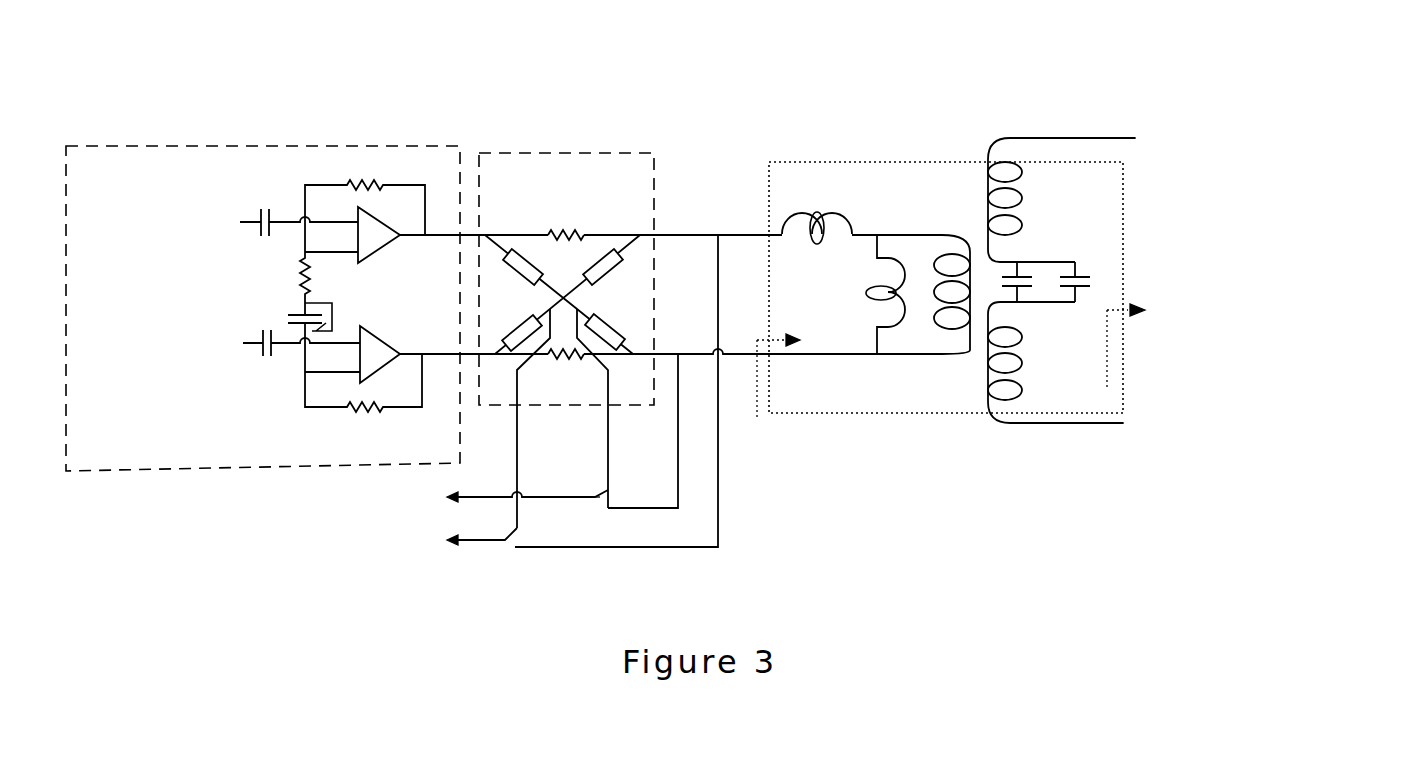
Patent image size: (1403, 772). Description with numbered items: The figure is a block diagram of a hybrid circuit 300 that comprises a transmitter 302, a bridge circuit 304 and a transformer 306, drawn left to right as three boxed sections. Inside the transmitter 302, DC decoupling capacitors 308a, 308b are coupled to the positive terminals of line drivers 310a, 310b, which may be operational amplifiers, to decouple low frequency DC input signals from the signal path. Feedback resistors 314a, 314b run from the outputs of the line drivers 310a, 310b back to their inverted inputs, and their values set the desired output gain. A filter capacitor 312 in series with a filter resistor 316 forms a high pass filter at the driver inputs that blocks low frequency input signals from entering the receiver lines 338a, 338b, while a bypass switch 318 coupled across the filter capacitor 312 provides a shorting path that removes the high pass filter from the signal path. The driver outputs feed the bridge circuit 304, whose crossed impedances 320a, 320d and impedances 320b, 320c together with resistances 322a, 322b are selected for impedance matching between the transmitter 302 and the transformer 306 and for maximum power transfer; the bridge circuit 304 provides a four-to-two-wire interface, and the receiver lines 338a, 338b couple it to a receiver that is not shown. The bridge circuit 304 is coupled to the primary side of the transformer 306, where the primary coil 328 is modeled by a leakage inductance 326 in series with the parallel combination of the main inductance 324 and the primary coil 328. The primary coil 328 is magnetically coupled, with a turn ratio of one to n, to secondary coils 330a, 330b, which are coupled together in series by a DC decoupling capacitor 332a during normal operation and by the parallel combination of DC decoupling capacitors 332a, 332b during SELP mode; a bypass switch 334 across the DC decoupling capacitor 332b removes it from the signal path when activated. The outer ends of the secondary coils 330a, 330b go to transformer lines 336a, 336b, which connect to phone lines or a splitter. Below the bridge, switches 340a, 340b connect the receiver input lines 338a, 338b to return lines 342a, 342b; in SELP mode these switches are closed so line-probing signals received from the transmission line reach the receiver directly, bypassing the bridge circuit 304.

The hybrid circuit 300 is at (720, 43).
The transmitter 302 is at (398, 140).
The bridge circuit 304 is at (577, 190).
The transformer 306 is at (780, 160).
The DC decoupling capacitor 308a is at (258, 212).
The DC decoupling capacitor 308b is at (258, 346).
The line driver 310a is at (380, 260).
The line driver 310b is at (383, 346).
The filter capacitor 312 is at (285, 305).
The feedback resistor 314a is at (376, 411).
The feedback resistor 314b is at (383, 186).
The filter resistor 316 is at (308, 286).
The bypass switch 318 is at (333, 313).
The impedance 320a is at (524, 257).
The impedance 320b is at (624, 262).
The impedance 320c is at (620, 340).
The impedance 320d is at (520, 325).
The resistance 322a is at (588, 233).
The resistance 322b is at (550, 362).
The main inductance 324 is at (868, 290).
The leakage inductance 326 is at (845, 216).
The primary coil 328 is at (948, 225).
The secondary coil 330a is at (1025, 198).
The secondary coil 330b is at (1025, 358).
The DC decoupling capacitor 332a is at (1003, 276).
The DC decoupling capacitor 332b is at (1088, 275).
The bypass switch 334 is at (1048, 262).
The transformer line 336a is at (1135, 138).
The transformer line 336b is at (1123, 423).
The receiver line 338a is at (456, 490).
The receiver line 338b is at (462, 545).
The switch 340a is at (592, 496).
The switch 340b is at (503, 535).
The return line 342a is at (722, 485).
The return line 342b is at (667, 462).